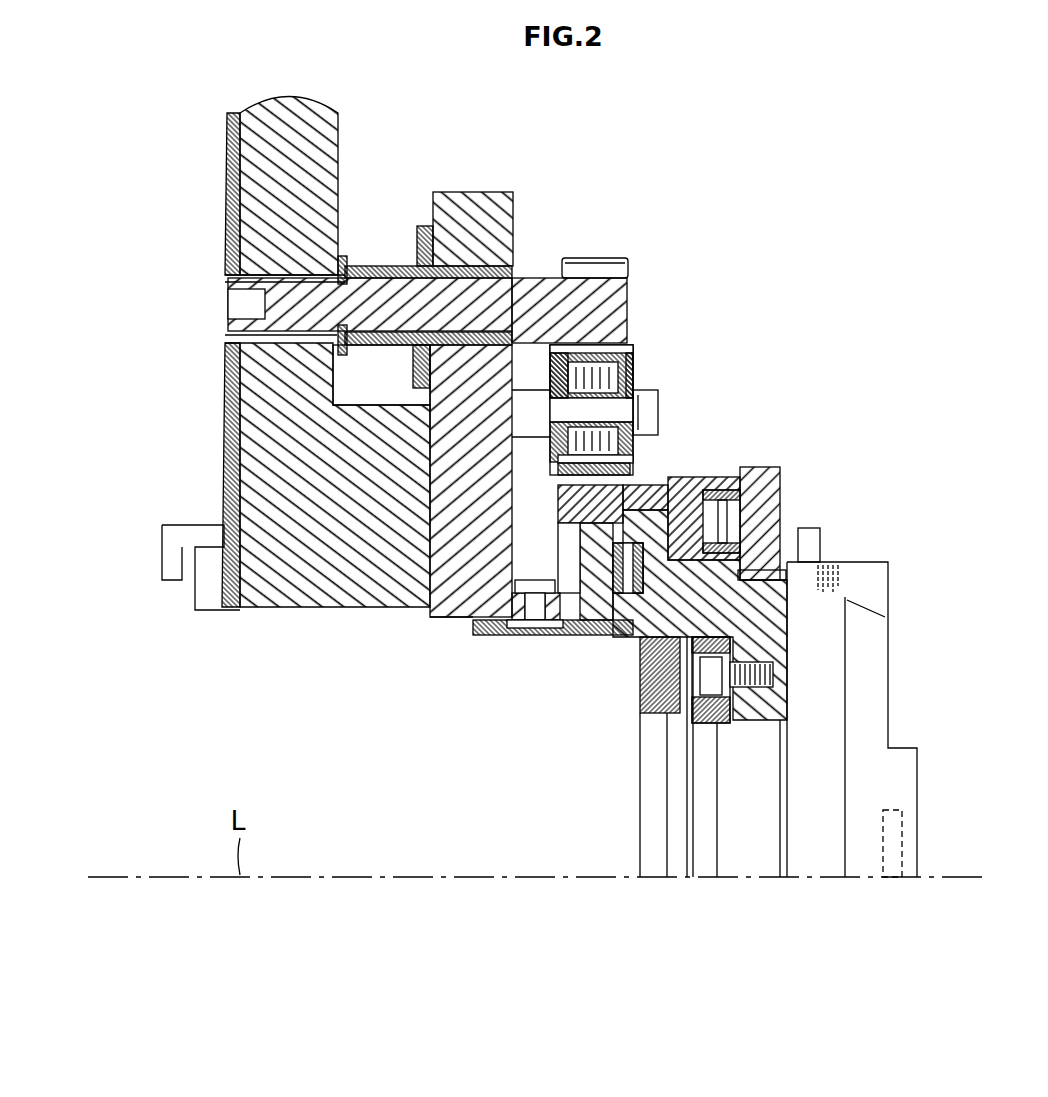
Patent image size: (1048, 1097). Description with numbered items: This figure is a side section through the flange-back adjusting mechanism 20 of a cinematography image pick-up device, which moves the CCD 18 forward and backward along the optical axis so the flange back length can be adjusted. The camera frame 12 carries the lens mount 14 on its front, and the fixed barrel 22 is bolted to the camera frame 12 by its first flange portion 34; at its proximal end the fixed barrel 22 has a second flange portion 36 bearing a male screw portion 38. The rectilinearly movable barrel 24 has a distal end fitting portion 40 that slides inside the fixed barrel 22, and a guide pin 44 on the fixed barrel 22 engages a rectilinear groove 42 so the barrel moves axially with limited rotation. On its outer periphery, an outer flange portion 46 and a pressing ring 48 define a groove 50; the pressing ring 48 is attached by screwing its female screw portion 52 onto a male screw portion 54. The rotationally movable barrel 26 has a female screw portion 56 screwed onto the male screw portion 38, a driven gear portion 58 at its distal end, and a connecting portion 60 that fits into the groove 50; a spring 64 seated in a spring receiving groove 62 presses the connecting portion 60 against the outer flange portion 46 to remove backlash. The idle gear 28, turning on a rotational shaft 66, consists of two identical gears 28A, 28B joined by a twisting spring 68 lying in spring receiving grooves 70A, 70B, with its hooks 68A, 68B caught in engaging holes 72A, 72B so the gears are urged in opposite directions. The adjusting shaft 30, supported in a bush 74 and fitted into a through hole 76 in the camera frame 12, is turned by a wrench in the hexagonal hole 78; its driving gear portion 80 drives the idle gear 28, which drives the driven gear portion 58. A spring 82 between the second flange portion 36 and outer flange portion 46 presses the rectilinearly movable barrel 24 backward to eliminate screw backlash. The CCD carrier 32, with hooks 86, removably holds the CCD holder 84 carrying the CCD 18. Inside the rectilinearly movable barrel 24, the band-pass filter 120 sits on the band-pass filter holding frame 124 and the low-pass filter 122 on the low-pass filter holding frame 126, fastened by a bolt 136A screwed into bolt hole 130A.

The camera frame 12 is at (250, 138).
The lens mount 14 is at (170, 525).
The CCD 18 is at (895, 835).
The flange-back adjusting mechanism 20 is at (778, 160).
The fixed barrel 22 is at (428, 620).
The rectilinearly movable barrel 24 is at (483, 640).
The rotationally movable barrel 26 is at (556, 523).
The idle gear 28 is at (613, 338).
The gear 28A is at (573, 360).
The gear 28B is at (631, 332).
The adjusting shaft 30 is at (368, 266).
The CCD carrier 32 is at (822, 727).
The first flange portion 34 is at (457, 205).
The second flange portion 36 is at (535, 622).
The male screw portion 38 is at (548, 624).
The distal end fitting portion 40 is at (503, 637).
The rectilinear groove 42 is at (510, 635).
The guide pin 44 is at (556, 637).
The outer flange portion 46 is at (705, 485).
The pressing ring 48 is at (760, 495).
The groove 50 is at (628, 600).
The female screw portion 52 is at (790, 605).
The male screw portion 54 is at (790, 550).
The female screw portion 56 is at (440, 618).
The driven gear portion 58 is at (624, 483).
The connecting portion 60 is at (705, 478).
The spring receiving groove 62 is at (762, 490).
The spring 64 is at (762, 540).
The rotational shaft 66 is at (658, 400).
The twisting spring 68 is at (634, 348).
The hook 68A is at (562, 480).
The hook 68B is at (648, 402).
The spring receiving groove 70A is at (572, 365).
The spring receiving groove 70B is at (622, 350).
The engaging hole 72A is at (560, 470).
The engaging hole 72B is at (640, 445).
The bush 74 is at (418, 250).
The through hole 76 is at (230, 278).
The hexagonal hole 78 is at (252, 318).
The driving gear portion 80 is at (630, 350).
The spring 82 is at (608, 632).
The CCD holder 84 is at (905, 858).
The hooks 86 is at (880, 580).
The band-pass filter 120 is at (653, 813).
The low-pass filter 122 is at (707, 797).
The band-pass filter holding frame 124 is at (662, 715).
The low-pass filter holding frame 126 is at (728, 725).
The bolt hole 130A is at (776, 675).
The bolt 136A is at (745, 690).